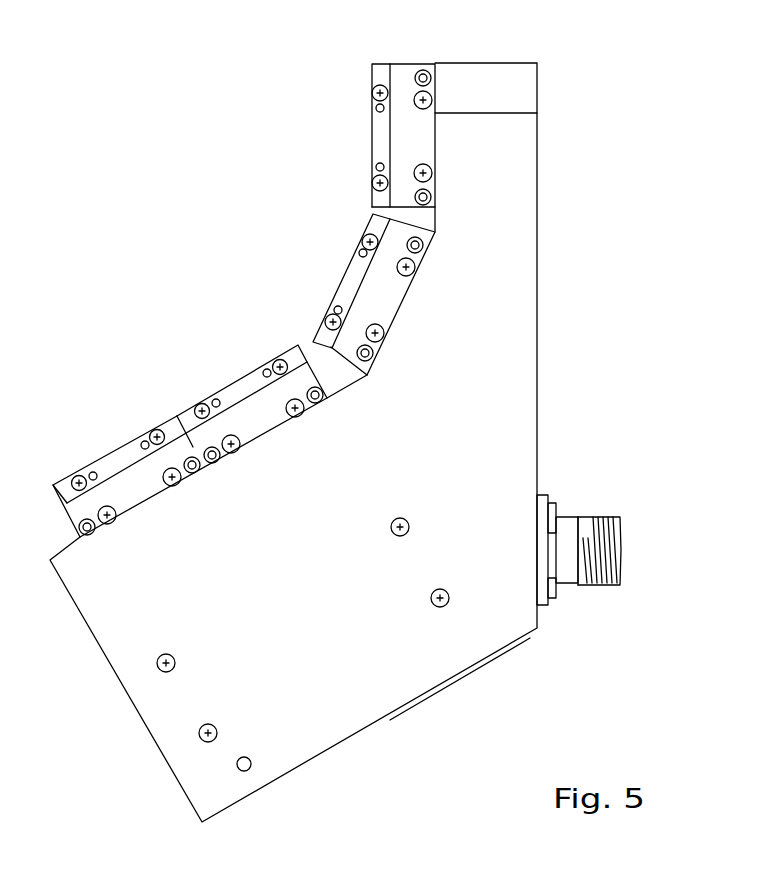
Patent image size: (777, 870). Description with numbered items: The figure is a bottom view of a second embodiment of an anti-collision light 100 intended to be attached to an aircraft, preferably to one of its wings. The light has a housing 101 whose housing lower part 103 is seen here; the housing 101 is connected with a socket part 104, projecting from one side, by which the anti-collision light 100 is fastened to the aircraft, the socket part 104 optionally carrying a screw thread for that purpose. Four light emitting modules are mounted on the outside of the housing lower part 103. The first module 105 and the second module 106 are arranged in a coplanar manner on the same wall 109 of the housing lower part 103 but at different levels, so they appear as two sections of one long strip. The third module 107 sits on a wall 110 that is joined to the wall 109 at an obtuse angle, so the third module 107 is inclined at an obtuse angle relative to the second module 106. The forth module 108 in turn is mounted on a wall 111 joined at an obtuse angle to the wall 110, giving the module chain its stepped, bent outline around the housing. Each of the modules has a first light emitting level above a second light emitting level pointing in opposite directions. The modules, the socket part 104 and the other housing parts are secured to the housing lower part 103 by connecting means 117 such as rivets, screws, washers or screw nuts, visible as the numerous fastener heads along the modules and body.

The anti-collision light 100 is at (633, 66).
The housing 101 is at (293, 442).
The housing lower part 103 is at (482, 456).
The socket part 104 is at (588, 515).
The first module 105 is at (108, 453).
The second module 106 is at (243, 375).
The third module 107 is at (347, 265).
The forth module 108 is at (371, 121).
The wall 109 is at (200, 478).
The wall 110 is at (402, 311).
The wall 111 is at (438, 155).
The connecting means 117 is at (556, 588).